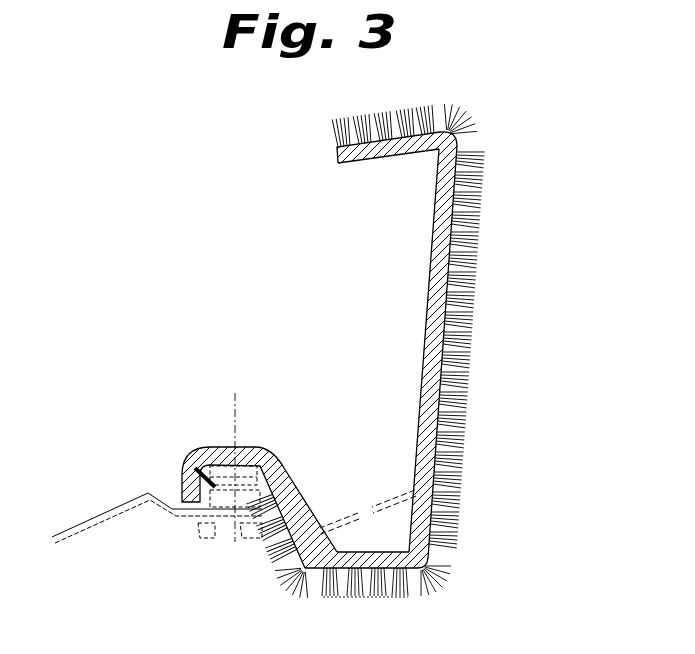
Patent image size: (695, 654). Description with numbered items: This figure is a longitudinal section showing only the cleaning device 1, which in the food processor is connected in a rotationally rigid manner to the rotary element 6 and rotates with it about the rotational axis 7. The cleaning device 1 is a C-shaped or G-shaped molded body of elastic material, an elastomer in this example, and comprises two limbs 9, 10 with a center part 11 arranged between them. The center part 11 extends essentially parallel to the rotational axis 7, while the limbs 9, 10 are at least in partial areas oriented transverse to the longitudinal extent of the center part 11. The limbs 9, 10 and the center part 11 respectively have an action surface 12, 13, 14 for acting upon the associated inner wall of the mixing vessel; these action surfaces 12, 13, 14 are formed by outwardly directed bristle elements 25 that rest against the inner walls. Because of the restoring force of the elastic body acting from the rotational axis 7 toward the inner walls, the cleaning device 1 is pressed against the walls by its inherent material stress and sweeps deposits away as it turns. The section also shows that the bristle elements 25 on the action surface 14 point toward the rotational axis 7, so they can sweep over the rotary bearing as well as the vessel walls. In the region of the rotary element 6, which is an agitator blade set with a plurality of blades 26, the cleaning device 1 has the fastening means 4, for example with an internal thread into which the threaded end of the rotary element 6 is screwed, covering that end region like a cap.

The cleaning device 1 is at (536, 128).
The fastening means 4 is at (215, 457).
The rotary element 6 is at (193, 470).
The rotational axis 7 is at (244, 432).
The limb 9 is at (379, 152).
The limb 10 is at (361, 550).
The center part 11 is at (430, 299).
The action surface 12 is at (393, 108).
The action surface 13 is at (472, 346).
The action surface 14 is at (387, 598).
The bristle elements 25 is at (455, 112).
The blades 26 is at (95, 520).